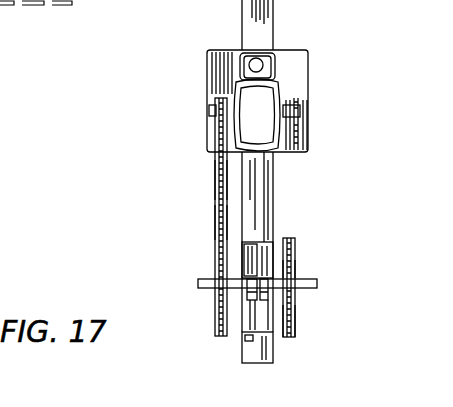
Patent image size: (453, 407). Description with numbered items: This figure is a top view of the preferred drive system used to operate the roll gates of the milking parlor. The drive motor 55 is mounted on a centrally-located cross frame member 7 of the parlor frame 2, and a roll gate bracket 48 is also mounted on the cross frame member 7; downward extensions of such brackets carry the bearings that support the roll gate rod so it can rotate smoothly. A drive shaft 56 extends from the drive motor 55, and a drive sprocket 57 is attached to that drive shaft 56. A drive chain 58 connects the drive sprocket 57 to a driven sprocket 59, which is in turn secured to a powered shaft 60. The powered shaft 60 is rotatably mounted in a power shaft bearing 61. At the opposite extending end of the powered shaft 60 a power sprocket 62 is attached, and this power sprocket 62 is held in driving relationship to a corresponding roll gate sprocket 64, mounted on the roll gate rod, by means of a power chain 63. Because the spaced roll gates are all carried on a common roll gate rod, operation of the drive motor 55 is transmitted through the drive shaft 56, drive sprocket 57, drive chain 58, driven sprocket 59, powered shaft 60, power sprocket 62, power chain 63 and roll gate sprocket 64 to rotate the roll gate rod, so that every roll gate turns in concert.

The parlor frame 2 is at (230, 13).
The cross frame member 7 is at (262, 24).
The roll gate bracket 48 is at (242, 346).
The drive motor 55 is at (268, 122).
The drive shaft 56 is at (212, 104).
The drive sprocket 57 is at (217, 121).
The drive chain 58 is at (215, 179).
The driven sprocket 59 is at (215, 218).
The powered shaft 60 is at (203, 288).
The power shaft bearing 61 is at (250, 274).
The power sprocket 62 is at (295, 278).
The power chain 63 is at (292, 327).
The roll gate sprocket 64 is at (295, 251).